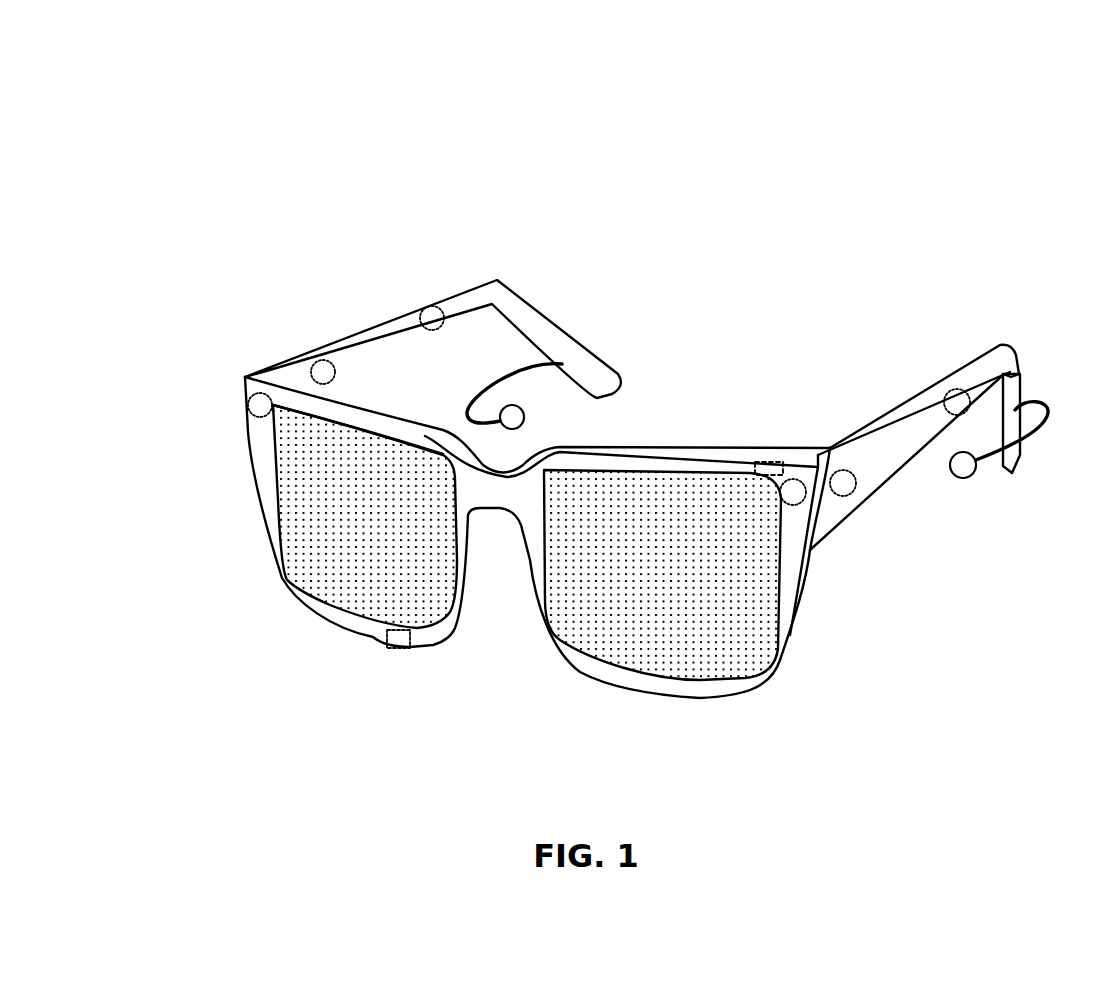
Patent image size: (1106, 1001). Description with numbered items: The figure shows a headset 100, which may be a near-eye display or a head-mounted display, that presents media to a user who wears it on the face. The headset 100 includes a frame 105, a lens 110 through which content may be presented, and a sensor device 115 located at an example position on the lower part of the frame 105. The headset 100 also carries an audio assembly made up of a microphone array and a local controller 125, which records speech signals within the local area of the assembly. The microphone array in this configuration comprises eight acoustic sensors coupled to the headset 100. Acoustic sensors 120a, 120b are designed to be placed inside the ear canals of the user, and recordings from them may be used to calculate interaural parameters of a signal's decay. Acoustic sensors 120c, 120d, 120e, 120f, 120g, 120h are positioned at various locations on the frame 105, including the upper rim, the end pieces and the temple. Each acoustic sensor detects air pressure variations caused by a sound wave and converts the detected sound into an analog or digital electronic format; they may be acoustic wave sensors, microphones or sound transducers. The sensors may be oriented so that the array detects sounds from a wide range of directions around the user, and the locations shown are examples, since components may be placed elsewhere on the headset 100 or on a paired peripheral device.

The headset 100 is at (181, 49).
The frame 105 is at (512, 289).
The lens 110 is at (302, 497).
The sensor device 115 is at (385, 636).
The acoustic sensor 120a is at (971, 476).
The acoustic sensor 120b is at (513, 407).
The acoustic sensor 120c is at (957, 390).
The acoustic sensor 120d is at (430, 312).
The acoustic sensor 120e is at (330, 368).
The acoustic sensor 120f is at (258, 405).
The acoustic sensor 120g is at (800, 505).
The acoustic sensor 120h is at (853, 493).
The local controller 125 is at (768, 463).